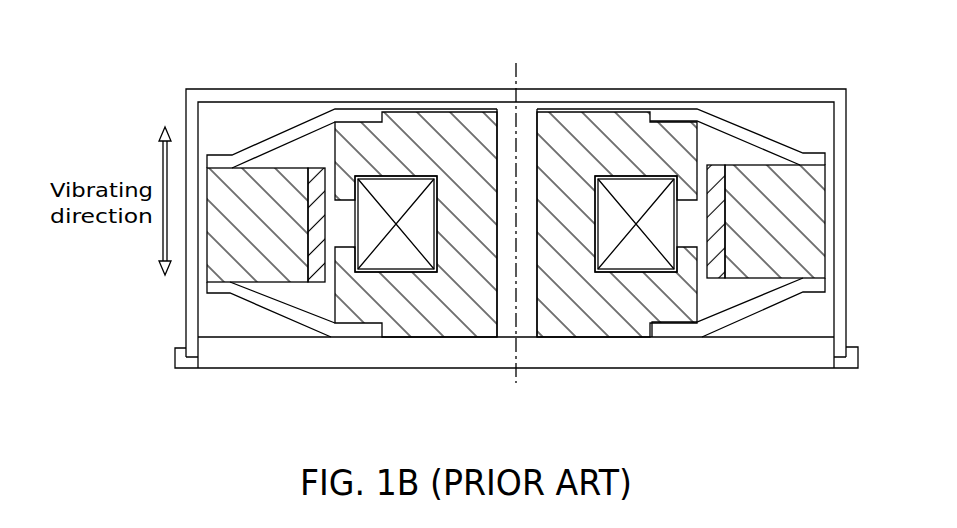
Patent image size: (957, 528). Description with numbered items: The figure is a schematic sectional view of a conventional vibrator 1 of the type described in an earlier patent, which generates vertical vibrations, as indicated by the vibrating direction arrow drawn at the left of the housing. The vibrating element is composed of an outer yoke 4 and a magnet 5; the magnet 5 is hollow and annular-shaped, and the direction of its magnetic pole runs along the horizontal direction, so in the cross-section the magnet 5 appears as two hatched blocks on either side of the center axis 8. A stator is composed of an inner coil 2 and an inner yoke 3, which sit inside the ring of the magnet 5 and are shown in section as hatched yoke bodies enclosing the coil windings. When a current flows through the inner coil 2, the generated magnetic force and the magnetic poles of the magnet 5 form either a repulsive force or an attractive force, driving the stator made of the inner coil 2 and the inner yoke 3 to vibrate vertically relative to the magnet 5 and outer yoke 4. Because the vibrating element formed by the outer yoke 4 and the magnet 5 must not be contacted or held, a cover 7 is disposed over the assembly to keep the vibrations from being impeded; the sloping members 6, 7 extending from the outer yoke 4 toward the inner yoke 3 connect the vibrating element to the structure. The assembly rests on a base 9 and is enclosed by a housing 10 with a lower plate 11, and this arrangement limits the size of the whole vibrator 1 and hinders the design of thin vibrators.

The linear vibration motor 1 is at (593, 81).
The inner coil 2 is at (643, 195).
The inner yoke 3 is at (462, 137).
The outer yoke 4 is at (802, 180).
The magnet 5 is at (319, 190).
The elastic member 6 is at (735, 313).
The cover 7 is at (386, 100).
The shaft 8 is at (528, 125).
The base plate 9 is at (582, 355).
The housing 10 is at (185, 347).
The circuit board 11 is at (363, 367).